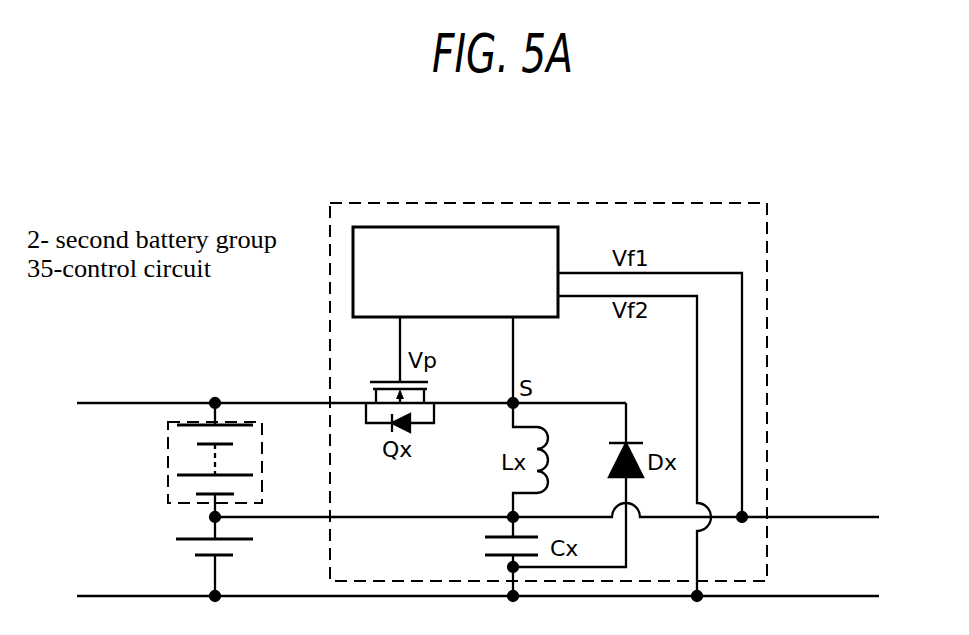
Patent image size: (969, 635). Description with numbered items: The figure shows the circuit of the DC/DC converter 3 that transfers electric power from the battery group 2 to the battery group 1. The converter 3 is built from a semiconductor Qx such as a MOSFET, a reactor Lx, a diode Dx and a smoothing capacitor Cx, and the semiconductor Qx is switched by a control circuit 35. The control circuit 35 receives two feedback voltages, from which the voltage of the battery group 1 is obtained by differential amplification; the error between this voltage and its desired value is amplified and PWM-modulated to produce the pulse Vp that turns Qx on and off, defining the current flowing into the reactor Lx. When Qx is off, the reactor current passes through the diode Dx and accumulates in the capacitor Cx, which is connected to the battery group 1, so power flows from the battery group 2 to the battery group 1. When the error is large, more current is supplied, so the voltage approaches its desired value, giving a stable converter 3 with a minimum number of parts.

The battery group 1 is at (185, 540).
The battery group 2 is at (168, 455).
The DC/DC converter 3 is at (767, 248).
The control circuit 35 is at (458, 233).